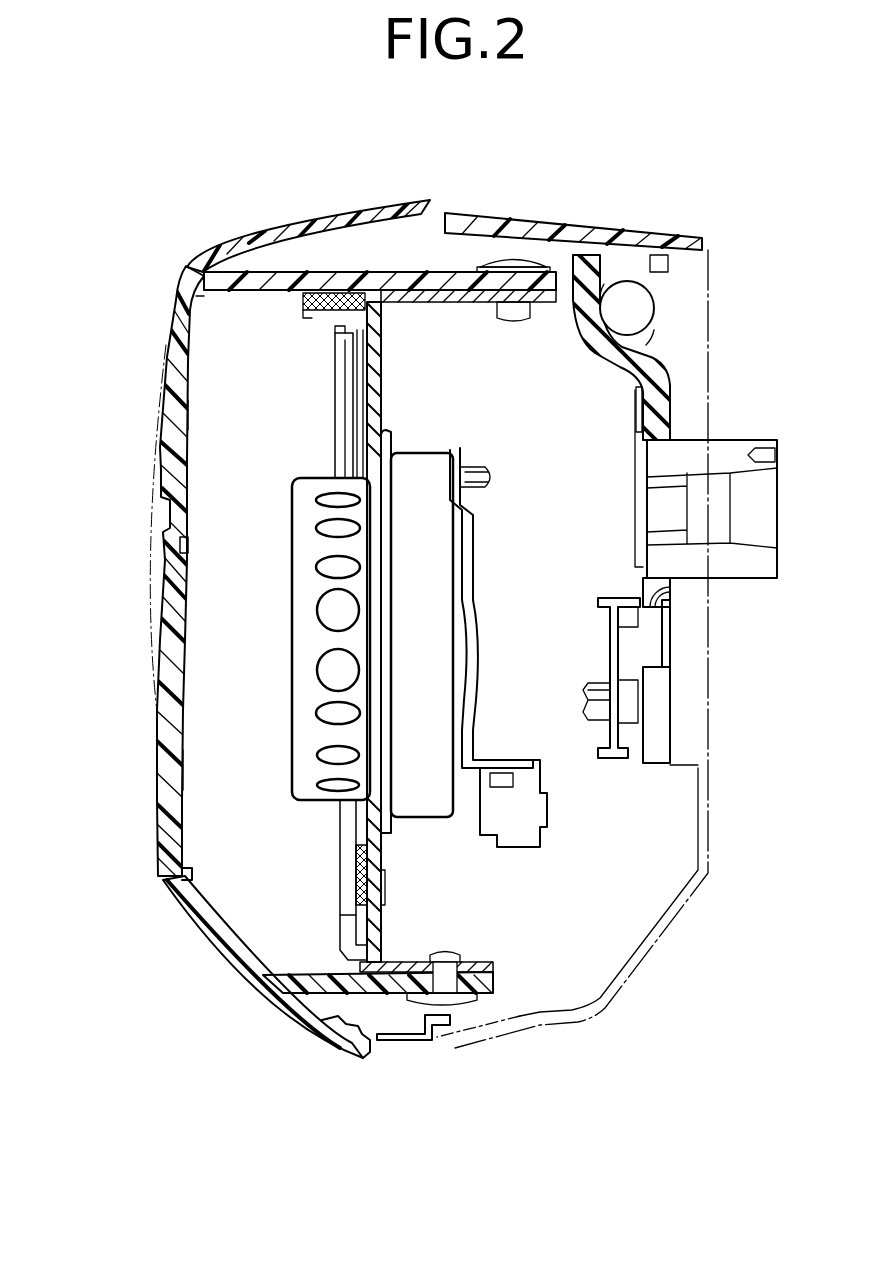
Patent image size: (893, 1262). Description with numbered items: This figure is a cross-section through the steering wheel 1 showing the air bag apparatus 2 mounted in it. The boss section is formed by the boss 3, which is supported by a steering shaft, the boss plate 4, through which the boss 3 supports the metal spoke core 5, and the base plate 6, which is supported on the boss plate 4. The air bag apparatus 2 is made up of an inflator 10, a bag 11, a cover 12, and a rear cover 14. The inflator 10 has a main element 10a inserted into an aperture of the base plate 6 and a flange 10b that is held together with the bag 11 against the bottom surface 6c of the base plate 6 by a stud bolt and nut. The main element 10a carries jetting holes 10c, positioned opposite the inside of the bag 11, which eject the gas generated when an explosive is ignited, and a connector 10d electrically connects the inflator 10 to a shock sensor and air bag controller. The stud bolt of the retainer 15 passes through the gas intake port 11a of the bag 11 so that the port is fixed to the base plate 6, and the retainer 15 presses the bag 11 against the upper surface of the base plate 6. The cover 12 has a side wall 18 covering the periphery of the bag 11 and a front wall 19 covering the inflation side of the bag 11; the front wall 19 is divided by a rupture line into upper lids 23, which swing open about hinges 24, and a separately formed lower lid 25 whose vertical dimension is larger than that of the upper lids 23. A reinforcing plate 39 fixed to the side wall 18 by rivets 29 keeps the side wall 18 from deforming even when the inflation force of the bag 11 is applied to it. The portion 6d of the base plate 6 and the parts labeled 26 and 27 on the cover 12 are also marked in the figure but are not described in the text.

The steering wheel 1 is at (207, 1008).
The air bag apparatus 2 is at (205, 226).
The boss 3 is at (746, 440).
The boss plate 4 is at (668, 374).
The metal spoke core 5 is at (652, 294).
The base plate 6 is at (397, 920).
The bottom surface of the base plate 6c is at (392, 890).
The bracket fastening portion 6d is at (470, 303).
The inflator 10 is at (262, 552).
The main element 10a is at (290, 586).
The flange 10b is at (318, 652).
The jetting holes 10c is at (315, 604).
The connector 10d is at (540, 830).
The bag 11 is at (332, 306).
The gas intake port 11a is at (395, 847).
The cover 12 is at (157, 292).
The rear cover 14 is at (636, 222).
The retainer 15 is at (358, 862).
The side wall 18 is at (303, 272).
The front wall 19 is at (160, 354).
The upper lid 23 is at (188, 414).
The hinge 24 is at (200, 298).
The lower lid 25 is at (184, 767).
The engaging rib 26 is at (292, 490).
The engaging notch 27 is at (192, 876).
The rivets 29 is at (496, 255).
The reinforcing plate 39 is at (540, 258).